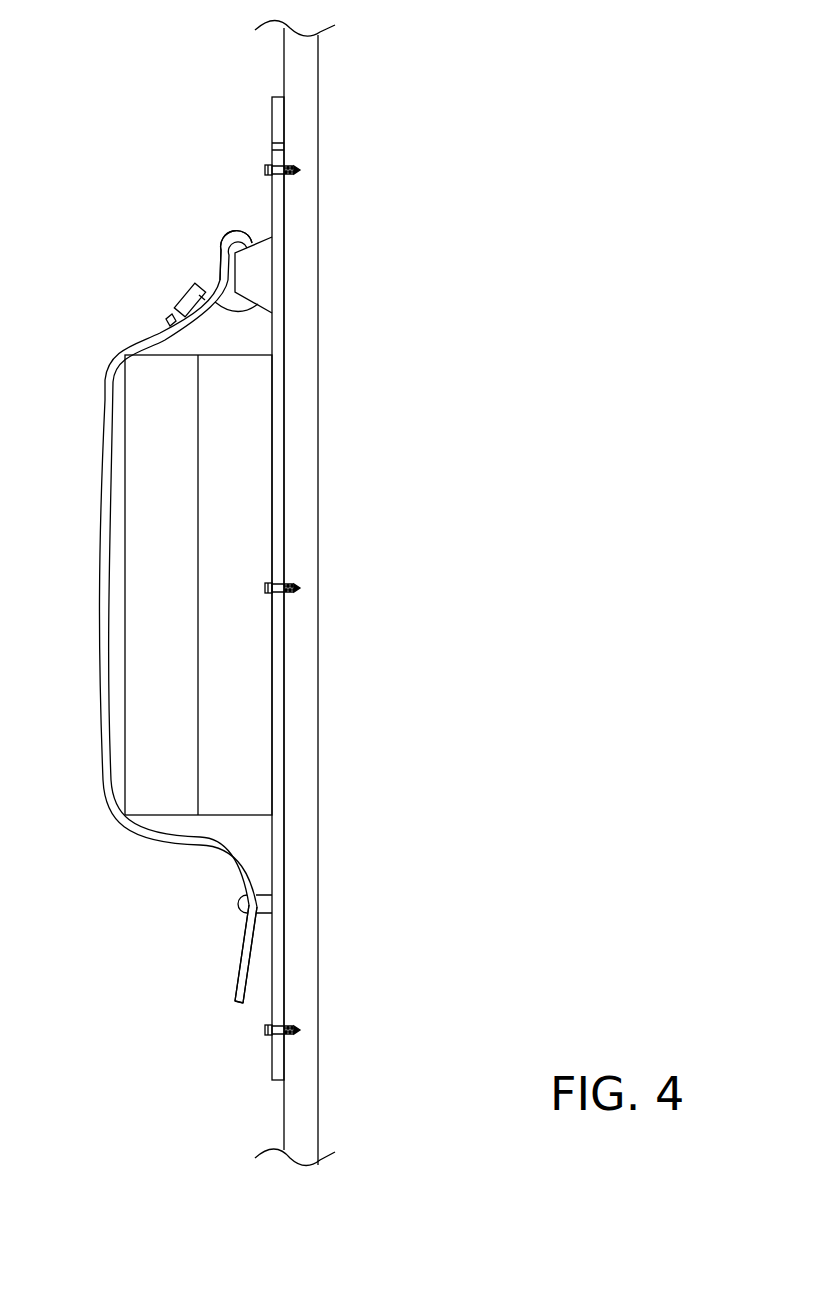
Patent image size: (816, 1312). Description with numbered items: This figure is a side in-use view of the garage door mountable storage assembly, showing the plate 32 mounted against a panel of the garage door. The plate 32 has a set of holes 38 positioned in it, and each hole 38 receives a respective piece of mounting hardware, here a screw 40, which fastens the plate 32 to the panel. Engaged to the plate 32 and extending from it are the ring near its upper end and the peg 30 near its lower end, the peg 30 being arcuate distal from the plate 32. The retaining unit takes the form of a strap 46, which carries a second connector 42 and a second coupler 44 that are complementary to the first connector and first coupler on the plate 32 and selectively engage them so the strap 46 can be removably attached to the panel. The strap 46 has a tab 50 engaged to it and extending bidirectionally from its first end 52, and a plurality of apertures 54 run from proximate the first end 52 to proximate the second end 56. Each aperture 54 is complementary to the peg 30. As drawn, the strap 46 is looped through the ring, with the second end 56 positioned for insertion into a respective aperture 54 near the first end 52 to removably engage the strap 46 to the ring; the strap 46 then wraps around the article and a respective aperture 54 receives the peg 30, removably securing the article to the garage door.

The peg 30 is at (228, 912).
The plate 32 is at (290, 288).
The hole 38 is at (291, 159).
The screw 40 is at (304, 172).
The second connector 42 is at (241, 228).
The second coupler 44 is at (235, 921).
The strap 46 is at (218, 242).
The tab 50 is at (177, 289).
The first end 52 is at (162, 312).
The aperture 54 is at (212, 316).
The second end 56 is at (231, 1003).